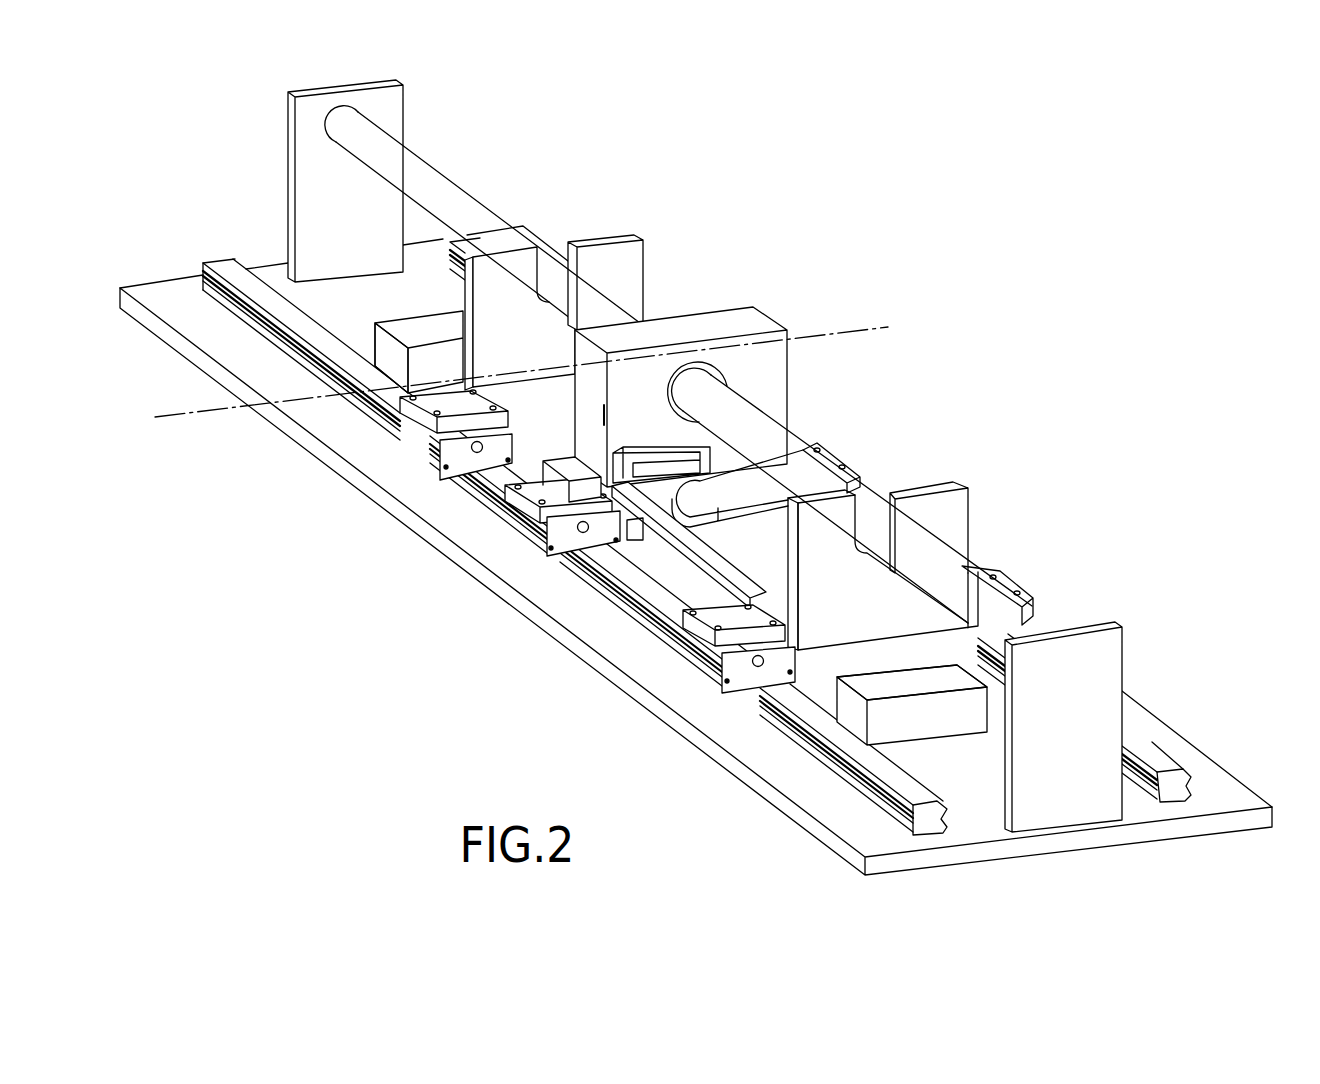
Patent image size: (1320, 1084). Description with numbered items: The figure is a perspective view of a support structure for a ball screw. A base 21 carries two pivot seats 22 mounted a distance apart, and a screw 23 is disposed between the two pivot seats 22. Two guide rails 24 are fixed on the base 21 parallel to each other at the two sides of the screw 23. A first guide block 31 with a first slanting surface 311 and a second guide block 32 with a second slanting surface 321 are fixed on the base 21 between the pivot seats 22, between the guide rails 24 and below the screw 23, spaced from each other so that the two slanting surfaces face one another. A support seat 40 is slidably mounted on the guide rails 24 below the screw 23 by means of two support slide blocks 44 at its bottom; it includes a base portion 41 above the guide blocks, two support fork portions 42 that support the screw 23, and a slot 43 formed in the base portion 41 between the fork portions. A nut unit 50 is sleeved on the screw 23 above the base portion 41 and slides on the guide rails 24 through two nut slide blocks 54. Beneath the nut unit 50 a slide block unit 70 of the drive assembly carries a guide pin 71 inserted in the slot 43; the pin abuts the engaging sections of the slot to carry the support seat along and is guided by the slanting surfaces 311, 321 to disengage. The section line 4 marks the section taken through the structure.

The base 21 is at (728, 760).
The pivot seats 22 is at (300, 152).
The screw 23 is at (940, 570).
The guide rails 24 is at (1153, 760).
The first guide block 31 is at (403, 327).
The first slanting surface 311 is at (420, 365).
The second guide block 32 is at (915, 687).
The second slanting surface 321 is at (870, 672).
The support seat 40 is at (690, 576).
The base portion 41 is at (763, 537).
The support fork portions 42 is at (610, 260).
The slot 43 is at (736, 506).
The support slide blocks 44 is at (430, 425).
The nut unit 50 is at (730, 303).
The nut slide blocks 54 is at (553, 538).
The slide block unit 70 is at (657, 468).
The guide pin 71 is at (638, 530).
The section line 4- 4 is at (896, 339).